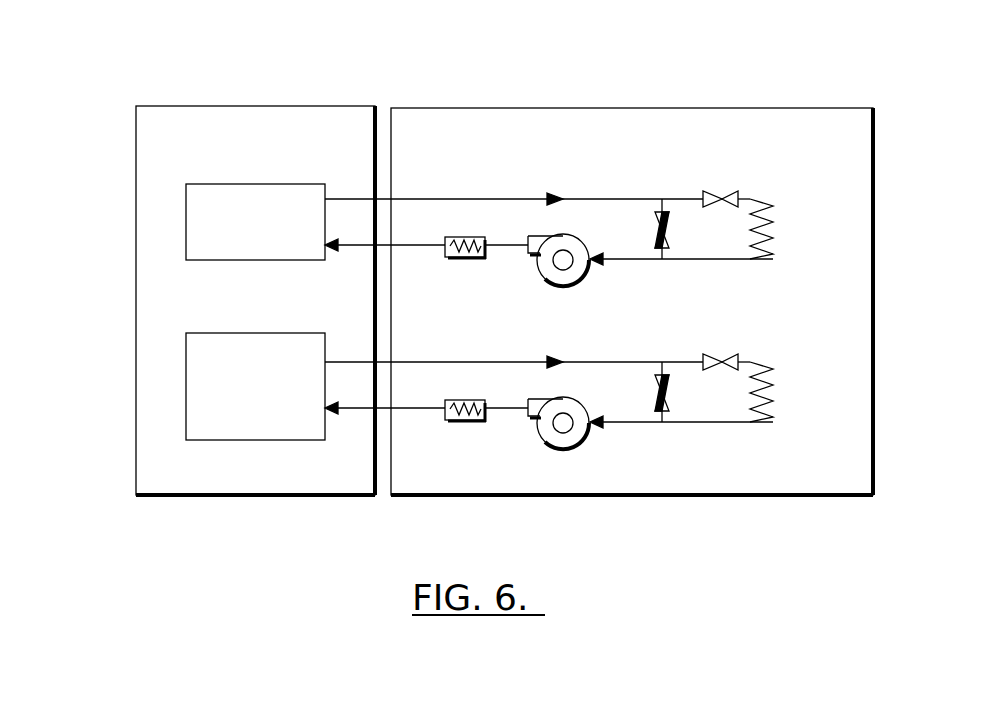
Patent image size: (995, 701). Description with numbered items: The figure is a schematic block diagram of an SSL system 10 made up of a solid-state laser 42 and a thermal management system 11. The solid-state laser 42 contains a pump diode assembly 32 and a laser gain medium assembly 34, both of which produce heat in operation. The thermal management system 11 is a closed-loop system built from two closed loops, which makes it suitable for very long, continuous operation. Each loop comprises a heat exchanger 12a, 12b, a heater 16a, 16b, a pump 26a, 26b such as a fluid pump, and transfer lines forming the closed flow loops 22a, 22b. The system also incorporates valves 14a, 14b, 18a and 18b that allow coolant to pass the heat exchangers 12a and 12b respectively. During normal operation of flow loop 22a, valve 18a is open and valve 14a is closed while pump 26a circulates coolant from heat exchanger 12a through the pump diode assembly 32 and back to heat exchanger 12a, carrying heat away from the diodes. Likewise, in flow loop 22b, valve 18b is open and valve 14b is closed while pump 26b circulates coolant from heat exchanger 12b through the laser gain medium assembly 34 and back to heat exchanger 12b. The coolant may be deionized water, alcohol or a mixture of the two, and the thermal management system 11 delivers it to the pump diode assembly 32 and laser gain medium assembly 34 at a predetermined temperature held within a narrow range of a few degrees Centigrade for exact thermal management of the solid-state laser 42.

The SSL system 10 is at (522, 70).
The thermal management system 11 is at (700, 108).
The heat exchanger 12a is at (788, 231).
The heat exchanger 12b is at (788, 392).
The valve 14a is at (657, 228).
The valve 14b is at (657, 391).
The heater 16a is at (463, 258).
The heater 16b is at (463, 421).
The valve 18a is at (722, 197).
The valve 18b is at (722, 360).
The flow loop 22a is at (456, 188).
The flow loop 22b is at (456, 351).
The pump 26a is at (583, 287).
The pump 26b is at (583, 450).
The pump diode assembly 32 is at (258, 184).
The laser gain medium assembly 34 is at (268, 440).
The solid-state laser 42 is at (135, 182).